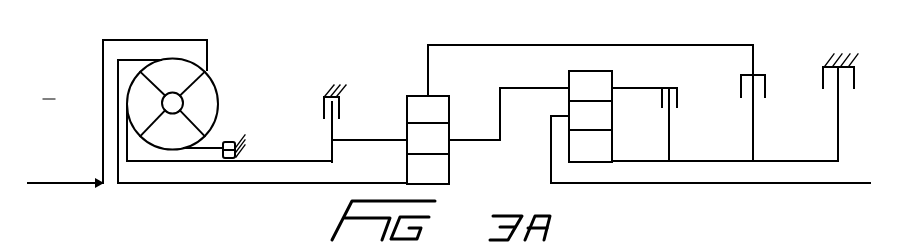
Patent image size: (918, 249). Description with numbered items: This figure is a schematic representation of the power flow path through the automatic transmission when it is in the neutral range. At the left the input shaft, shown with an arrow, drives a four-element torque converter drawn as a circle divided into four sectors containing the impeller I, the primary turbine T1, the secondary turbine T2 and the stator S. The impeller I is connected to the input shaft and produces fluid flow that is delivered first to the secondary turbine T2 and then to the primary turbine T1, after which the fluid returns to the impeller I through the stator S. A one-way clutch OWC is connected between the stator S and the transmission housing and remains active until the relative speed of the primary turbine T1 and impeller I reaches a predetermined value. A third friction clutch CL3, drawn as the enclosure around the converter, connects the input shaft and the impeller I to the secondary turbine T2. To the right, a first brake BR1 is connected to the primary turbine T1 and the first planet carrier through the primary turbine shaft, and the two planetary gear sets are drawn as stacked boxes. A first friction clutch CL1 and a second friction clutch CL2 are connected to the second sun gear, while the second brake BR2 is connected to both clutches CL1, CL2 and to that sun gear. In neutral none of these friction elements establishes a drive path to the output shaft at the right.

The third friction clutch CL3 is at (153, 102).
The first brake BR1 is at (341, 112).
The one-way clutch OWC is at (242, 146).
The second friction clutch CL2 is at (649, 114).
The first friction clutch CL1 is at (766, 107).
The second brake BR2 is at (843, 97).
The primary turbine T1 is at (141, 104).
The secondary turbine T2 is at (172, 84).
The impeller I is at (197, 104).
The stator S is at (172, 126).